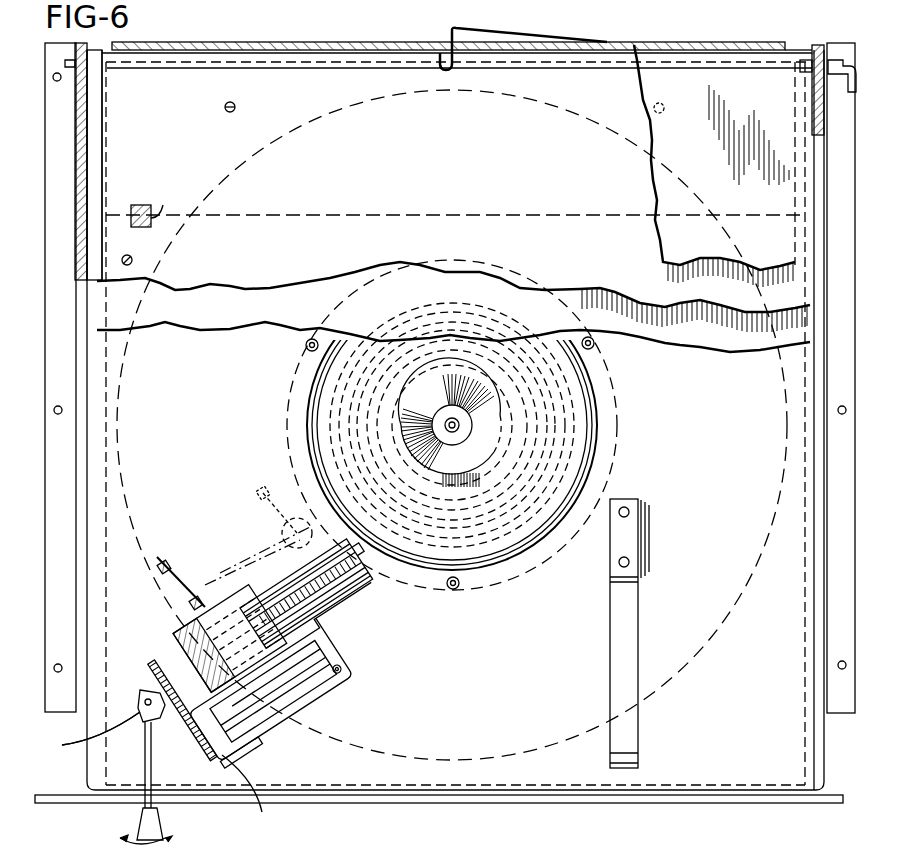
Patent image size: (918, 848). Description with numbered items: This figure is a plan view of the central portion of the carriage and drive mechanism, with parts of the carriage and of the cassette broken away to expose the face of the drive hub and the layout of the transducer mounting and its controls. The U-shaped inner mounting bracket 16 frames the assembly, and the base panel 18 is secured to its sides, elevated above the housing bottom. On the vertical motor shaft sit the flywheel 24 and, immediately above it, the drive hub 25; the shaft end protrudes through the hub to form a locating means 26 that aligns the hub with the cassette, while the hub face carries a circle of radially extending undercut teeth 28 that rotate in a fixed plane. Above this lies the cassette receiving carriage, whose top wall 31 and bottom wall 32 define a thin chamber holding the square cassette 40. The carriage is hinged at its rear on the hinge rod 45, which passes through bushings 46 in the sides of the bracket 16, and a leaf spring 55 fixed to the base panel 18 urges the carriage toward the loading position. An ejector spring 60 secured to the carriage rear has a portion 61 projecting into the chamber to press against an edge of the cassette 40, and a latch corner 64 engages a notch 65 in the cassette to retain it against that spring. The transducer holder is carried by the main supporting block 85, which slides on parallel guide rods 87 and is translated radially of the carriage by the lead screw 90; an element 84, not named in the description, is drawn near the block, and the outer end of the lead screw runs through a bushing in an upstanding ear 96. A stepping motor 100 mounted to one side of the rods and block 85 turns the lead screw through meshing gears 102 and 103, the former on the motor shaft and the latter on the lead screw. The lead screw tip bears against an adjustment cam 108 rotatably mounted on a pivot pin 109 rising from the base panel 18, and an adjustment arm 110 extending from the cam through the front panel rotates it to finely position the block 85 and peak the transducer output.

The inner mounting bracket 16 is at (823, 495).
The base panel 18 is at (748, 644).
The flywheel 24 is at (585, 415).
The drive hub 25 is at (426, 468).
The locating means 26 is at (442, 421).
The undercut teeth 28 is at (466, 387).
The top wall 31 is at (655, 182).
The bottom wall 32 is at (668, 330).
The cassette 40 is at (405, 195).
The hinge rod 45 is at (835, 60).
The bushings 46 is at (100, 75).
The leaf spring 55 is at (610, 652).
The ejector spring 60 is at (470, 28).
The projecting portion of ejector spring 61 is at (440, 72).
The latch corner 64 is at (140, 205).
The notch 65 is at (163, 205).
The pivot screw 84 is at (165, 562).
The main supporting block 85 is at (230, 639).
The guide rods 87 is at (309, 591).
The lead screw 90 is at (262, 592).
The upstanding ear 96 is at (241, 752).
The stepping motor 100 is at (295, 671).
The gear 102 is at (257, 797).
The gear 103 is at (182, 710).
The adjustment cam 108 is at (82, 734).
The pivot pin 109 is at (148, 692).
The adjustment arm 110 is at (163, 818).